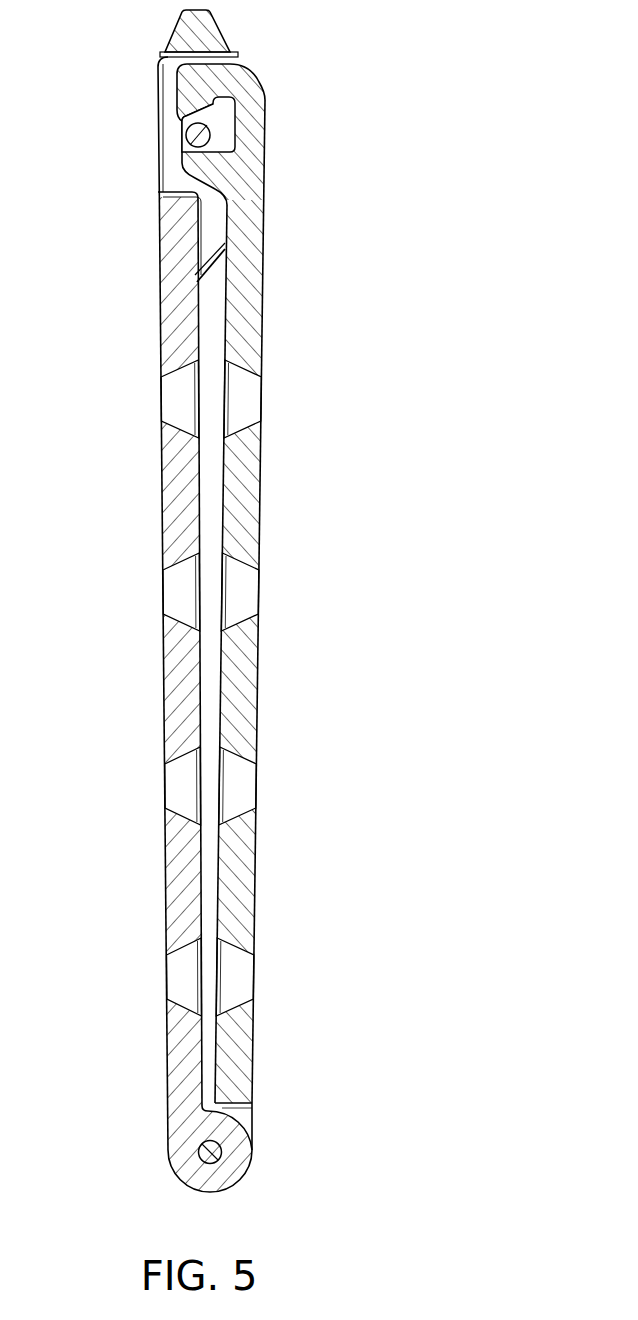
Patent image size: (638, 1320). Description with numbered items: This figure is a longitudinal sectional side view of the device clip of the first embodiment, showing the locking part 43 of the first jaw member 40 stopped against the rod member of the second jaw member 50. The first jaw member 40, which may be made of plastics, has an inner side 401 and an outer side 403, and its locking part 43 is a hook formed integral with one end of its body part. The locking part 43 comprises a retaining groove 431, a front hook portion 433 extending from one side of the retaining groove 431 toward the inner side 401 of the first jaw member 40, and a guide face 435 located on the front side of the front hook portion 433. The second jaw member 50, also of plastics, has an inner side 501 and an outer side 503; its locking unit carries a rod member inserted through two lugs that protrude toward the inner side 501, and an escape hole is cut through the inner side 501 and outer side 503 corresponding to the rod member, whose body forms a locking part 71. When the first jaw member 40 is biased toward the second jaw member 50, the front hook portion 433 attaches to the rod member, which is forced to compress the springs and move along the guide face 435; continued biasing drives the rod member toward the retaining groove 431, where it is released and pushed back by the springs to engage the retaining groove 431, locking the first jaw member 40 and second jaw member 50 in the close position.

The first jaw member 40 is at (202, 559).
The locking part 43 is at (202, 107).
The retaining groove 431 is at (232, 112).
The front hook portion 433 is at (190, 86).
The guide face 435 is at (178, 100).
The locking part 71 is at (205, 137).
The inner side 401 is at (222, 492).
The outer side 403 is at (261, 536).
The second jaw member 50 is at (164, 692).
The inner side 501 is at (208, 520).
The outer side 503 is at (166, 663).